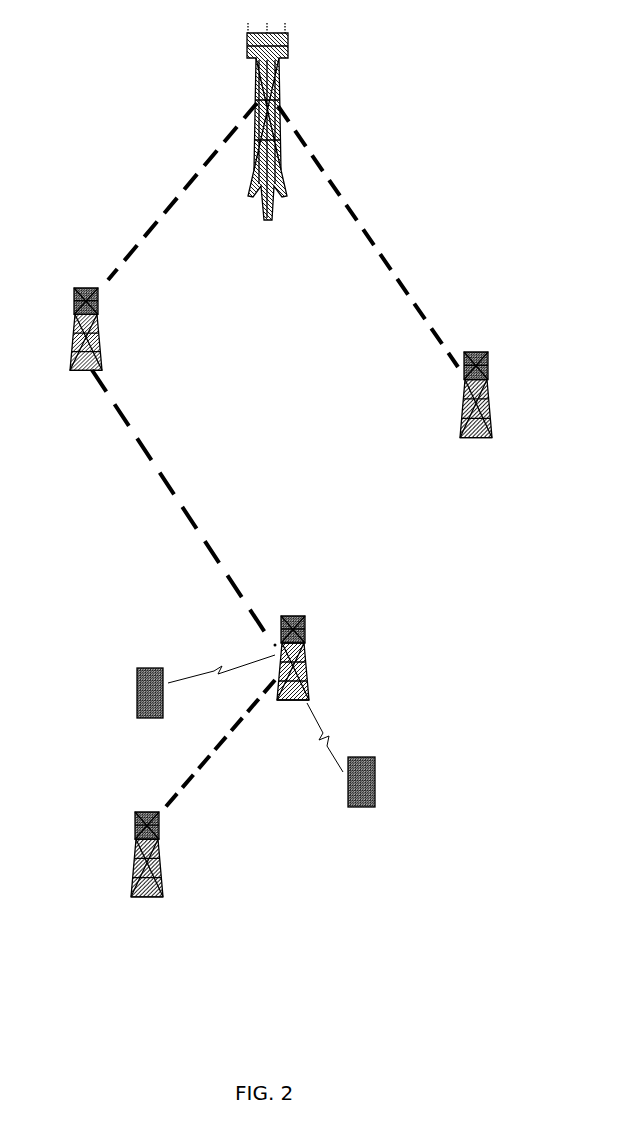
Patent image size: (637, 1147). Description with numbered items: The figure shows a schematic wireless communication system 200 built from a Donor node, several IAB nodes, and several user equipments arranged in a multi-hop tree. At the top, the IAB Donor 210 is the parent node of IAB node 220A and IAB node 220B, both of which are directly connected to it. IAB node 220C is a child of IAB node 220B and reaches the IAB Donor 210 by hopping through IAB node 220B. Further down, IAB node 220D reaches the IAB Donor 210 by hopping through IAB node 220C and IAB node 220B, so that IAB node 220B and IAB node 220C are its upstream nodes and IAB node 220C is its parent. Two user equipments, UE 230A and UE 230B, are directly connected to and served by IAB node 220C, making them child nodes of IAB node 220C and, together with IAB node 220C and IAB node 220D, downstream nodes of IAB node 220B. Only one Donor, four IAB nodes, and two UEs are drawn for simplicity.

The wireless communication system 200 is at (142, 120).
The IAB Donor 210 is at (269, 135).
The IAB node 220A is at (472, 412).
The IAB node 220B is at (68, 346).
The IAB node 220C is at (285, 678).
The IAB node 220D is at (148, 871).
The UE 230A is at (199, 705).
The UE 230B is at (343, 772).